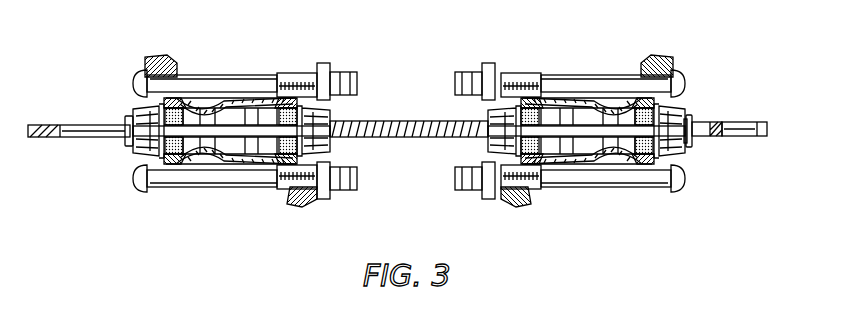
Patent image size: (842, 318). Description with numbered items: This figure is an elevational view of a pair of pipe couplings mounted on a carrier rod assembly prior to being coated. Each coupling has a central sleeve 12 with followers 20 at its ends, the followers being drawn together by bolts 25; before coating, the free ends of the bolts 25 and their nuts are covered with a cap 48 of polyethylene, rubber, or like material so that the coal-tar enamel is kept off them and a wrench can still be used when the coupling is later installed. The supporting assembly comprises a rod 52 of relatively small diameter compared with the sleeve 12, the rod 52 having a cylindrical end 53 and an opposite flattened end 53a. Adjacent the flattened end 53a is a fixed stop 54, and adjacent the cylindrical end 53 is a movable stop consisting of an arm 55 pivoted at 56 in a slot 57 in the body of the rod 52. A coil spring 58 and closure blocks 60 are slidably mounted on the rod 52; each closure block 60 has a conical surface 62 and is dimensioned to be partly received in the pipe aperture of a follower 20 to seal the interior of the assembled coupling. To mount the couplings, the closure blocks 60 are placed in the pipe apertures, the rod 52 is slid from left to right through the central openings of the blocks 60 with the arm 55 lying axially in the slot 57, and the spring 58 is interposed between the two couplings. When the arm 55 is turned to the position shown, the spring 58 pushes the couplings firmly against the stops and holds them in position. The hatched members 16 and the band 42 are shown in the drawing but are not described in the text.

The sleeve 12 is at (252, 163).
The hatched wedge seal members 16 is at (174, 106).
The followers 20 is at (308, 200).
The bolts 25 is at (212, 178).
The curved diaphragm band 42 is at (220, 104).
The cap 48 is at (355, 50).
The rod 52 is at (407, 121).
The cylindrical end 53 is at (761, 136).
The flattened end 53a is at (51, 127).
The fixed stop 54 is at (126, 119).
The arm 55 is at (687, 144).
The pivot 56 is at (694, 114).
The slot 57 is at (703, 126).
The coil spring 58 is at (374, 119).
The closure blocks 60 is at (143, 150).
The conical surface 62 is at (148, 132).